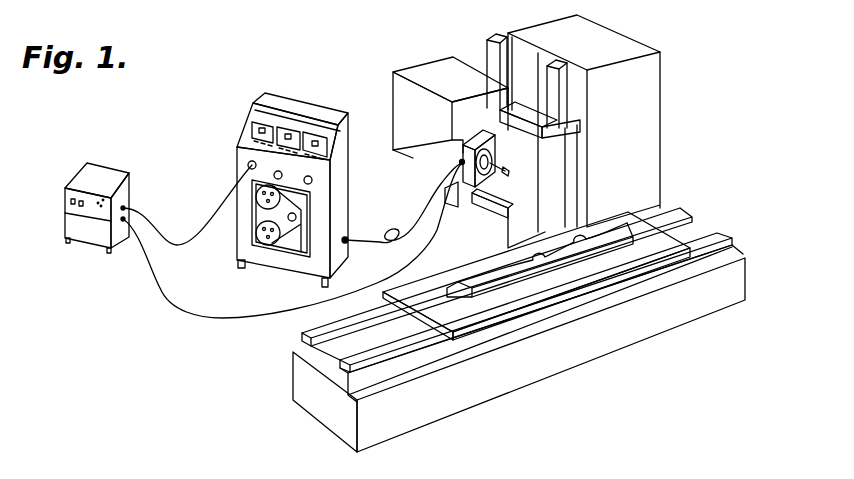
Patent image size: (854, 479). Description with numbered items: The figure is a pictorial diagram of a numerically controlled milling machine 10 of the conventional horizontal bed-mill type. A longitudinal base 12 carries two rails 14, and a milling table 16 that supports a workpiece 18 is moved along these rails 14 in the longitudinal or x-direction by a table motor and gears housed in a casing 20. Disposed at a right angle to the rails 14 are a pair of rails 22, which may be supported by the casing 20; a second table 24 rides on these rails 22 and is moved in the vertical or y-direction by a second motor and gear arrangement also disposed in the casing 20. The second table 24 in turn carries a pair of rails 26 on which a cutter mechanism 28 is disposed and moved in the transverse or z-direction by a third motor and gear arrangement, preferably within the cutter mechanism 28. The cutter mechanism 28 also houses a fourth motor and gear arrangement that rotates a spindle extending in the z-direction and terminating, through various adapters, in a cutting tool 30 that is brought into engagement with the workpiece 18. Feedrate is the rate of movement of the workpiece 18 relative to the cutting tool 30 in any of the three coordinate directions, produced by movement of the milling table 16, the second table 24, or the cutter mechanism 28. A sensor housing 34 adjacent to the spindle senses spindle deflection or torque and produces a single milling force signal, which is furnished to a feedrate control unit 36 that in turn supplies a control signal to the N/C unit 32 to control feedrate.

The milling machine 10 is at (729, 105).
The longitudinal base 12 is at (745, 287).
The rails 14 is at (302, 336).
The milling table 16 is at (573, 303).
The workpiece 18 is at (633, 230).
The casing 20 is at (664, 52).
The rails 22 is at (490, 55).
The second table 24 is at (585, 170).
The rails 26 is at (550, 137).
The cutter mechanism 28 is at (413, 67).
The cutting tool 30 is at (498, 172).
The N/C unit 32 is at (308, 102).
The sensor housing 34 is at (455, 142).
The feedrate control unit 36 is at (111, 167).